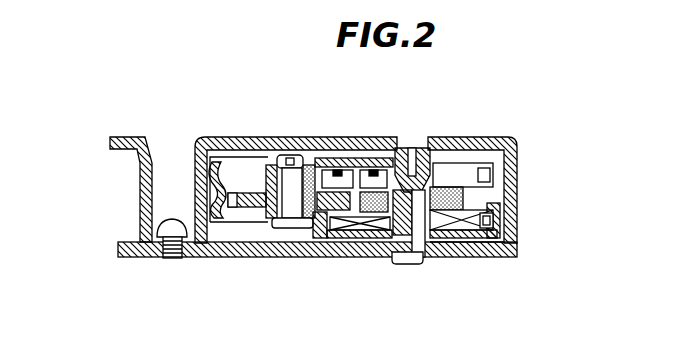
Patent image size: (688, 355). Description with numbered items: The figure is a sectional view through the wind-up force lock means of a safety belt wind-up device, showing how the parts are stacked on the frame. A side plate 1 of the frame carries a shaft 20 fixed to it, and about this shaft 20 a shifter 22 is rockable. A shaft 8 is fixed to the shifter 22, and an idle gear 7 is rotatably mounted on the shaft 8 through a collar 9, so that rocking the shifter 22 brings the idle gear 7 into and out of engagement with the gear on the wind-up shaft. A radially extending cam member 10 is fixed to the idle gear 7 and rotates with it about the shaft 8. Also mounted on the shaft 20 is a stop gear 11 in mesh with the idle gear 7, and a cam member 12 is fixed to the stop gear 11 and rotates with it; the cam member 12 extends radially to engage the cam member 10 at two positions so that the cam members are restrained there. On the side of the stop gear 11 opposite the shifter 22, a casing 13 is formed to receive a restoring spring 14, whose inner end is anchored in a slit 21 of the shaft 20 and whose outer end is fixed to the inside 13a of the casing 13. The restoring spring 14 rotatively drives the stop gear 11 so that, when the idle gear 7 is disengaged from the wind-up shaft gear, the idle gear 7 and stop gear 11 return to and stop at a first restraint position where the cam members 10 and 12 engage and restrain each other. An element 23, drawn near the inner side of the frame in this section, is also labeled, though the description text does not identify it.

The side plate 1 is at (199, 253).
The idle gear 7 is at (255, 207).
The shaft 8 is at (292, 155).
The collar 9 is at (313, 158).
The cam member 10 is at (340, 183).
The stop gear 11 is at (495, 187).
The cam member 12 is at (396, 170).
The casing 13 is at (338, 230).
The inside of the casing 13a is at (498, 218).
The restoring spring 14 is at (385, 222).
The shaft 20 is at (442, 255).
The slit 21 is at (402, 264).
The shifter 22 is at (372, 182).
The spring 23 is at (187, 175).